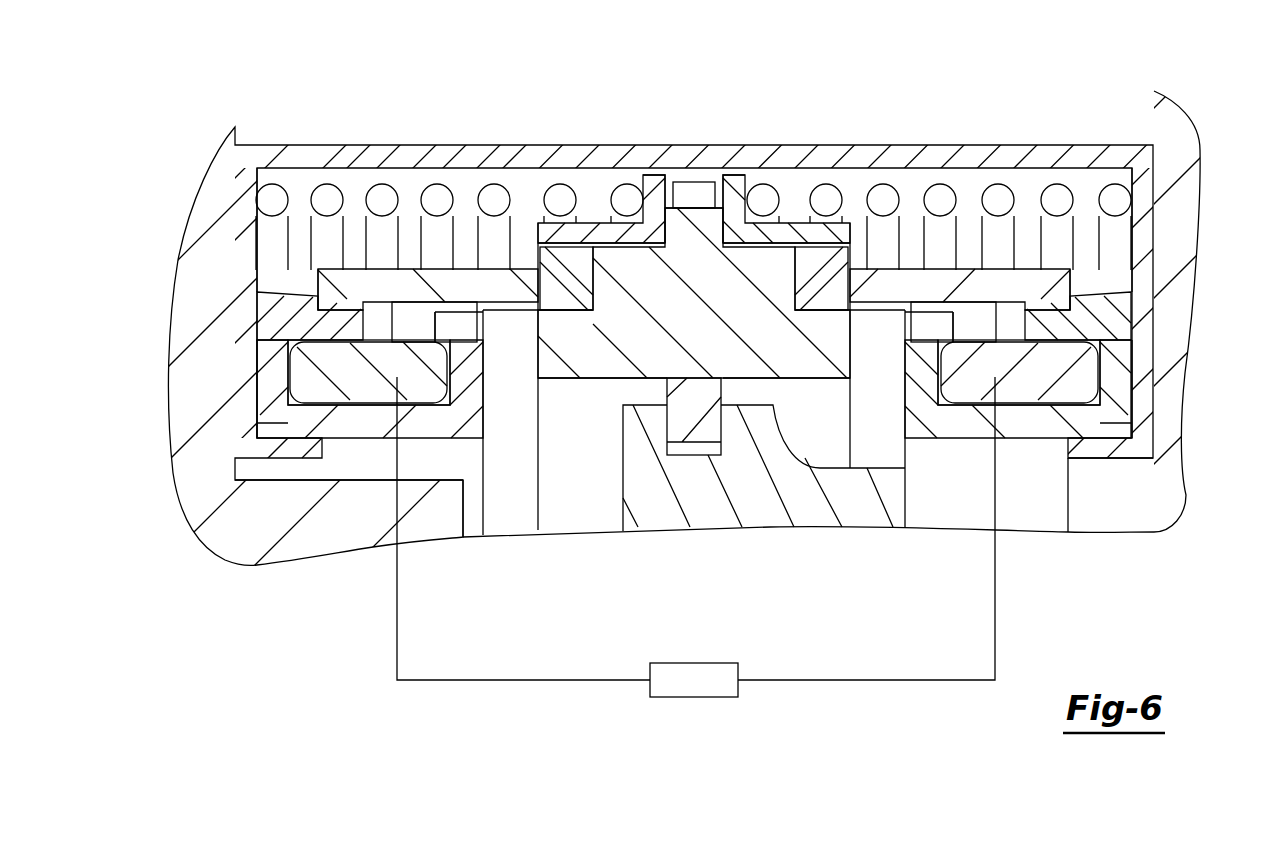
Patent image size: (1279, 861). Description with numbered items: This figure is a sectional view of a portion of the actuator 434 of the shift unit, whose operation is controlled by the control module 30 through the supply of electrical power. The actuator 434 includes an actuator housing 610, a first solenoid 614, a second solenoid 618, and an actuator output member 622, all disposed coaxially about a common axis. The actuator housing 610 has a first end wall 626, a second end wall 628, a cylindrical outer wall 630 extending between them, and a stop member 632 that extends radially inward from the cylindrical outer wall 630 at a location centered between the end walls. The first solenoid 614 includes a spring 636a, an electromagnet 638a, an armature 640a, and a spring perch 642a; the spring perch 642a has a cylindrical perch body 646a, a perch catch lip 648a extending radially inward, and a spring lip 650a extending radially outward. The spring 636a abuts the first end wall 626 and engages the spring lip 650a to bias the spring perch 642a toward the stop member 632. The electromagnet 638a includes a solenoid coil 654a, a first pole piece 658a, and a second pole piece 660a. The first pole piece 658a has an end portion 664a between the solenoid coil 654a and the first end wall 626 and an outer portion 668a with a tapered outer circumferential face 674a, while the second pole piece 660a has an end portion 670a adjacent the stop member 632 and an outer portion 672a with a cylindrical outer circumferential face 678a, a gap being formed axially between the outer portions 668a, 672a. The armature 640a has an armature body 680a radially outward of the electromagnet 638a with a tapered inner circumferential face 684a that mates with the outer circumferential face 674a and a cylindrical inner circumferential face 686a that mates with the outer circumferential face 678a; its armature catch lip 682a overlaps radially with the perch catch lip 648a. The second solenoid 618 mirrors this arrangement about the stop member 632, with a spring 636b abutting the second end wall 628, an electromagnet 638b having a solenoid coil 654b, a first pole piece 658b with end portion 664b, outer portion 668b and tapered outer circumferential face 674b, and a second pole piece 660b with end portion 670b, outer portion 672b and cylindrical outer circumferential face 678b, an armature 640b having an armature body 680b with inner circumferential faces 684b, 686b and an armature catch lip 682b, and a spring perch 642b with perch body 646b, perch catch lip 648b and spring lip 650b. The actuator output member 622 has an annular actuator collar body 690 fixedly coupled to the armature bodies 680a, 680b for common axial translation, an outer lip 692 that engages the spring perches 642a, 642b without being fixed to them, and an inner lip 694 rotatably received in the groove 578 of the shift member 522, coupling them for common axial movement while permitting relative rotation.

The control module 30 is at (716, 698).
The actuator 434 is at (207, 86).
The shift member 522 is at (873, 500).
The groove 578 is at (707, 456).
The actuator housing 610 is at (528, 145).
The first solenoid 614 is at (418, 182).
The second solenoid 618 is at (1047, 188).
The actuator output member 622 is at (643, 352).
The first end wall 626 is at (245, 215).
The second end wall 628 is at (1147, 215).
The cylindrical outer wall 630 is at (953, 175).
The stop member 632 is at (704, 182).
The spring 636a is at (366, 188).
The spring 636b is at (1046, 186).
The electromagnet 638a is at (262, 362).
The electromagnet 638b is at (1131, 360).
The armature 640a is at (444, 292).
The armature 640b is at (938, 294).
The spring perch 642a is at (583, 244).
The spring perch 642b is at (800, 248).
The perch body 646a is at (622, 215).
The perch body 646b is at (760, 198).
The perch catch lip 648a is at (562, 214).
The perch catch lip 648b is at (838, 214).
The spring lip 650a is at (652, 196).
The spring lip 650b is at (757, 205).
The solenoid coil 654a is at (308, 396).
The solenoid coil 654b is at (1072, 388).
The first pole piece 658a is at (270, 347).
The first pole piece 658b is at (1123, 352).
The second pole piece 660a is at (466, 488).
The second pole piece 660b is at (927, 424).
The end portion 664a is at (265, 382).
The end portion 664b is at (1123, 382).
The outer portion 668a is at (330, 336).
The outer portion 668b is at (1046, 345).
The end portion 670a is at (473, 414).
The end portion 670b is at (915, 410).
The outer portion 672a is at (514, 332).
The outer portion 672b is at (872, 343).
The outer circumferential face 674a is at (268, 300).
The outer circumferential face 674b is at (1120, 302).
The outer circumferential face 678a is at (460, 312).
The outer circumferential face 678b is at (928, 312).
The armature body 680a is at (442, 280).
The armature body 680b is at (946, 280).
The armature catch lip 682a is at (572, 250).
The armature catch lip 682b is at (797, 290).
The inner circumferential face 684a is at (358, 300).
The inner circumferential face 684b is at (1034, 300).
The inner circumferential face 686a is at (512, 313).
The inner circumferential face 686b is at (860, 330).
The actuator collar body 690 is at (788, 380).
The outer lip 692 is at (705, 180).
The inner lip 694 is at (688, 444).